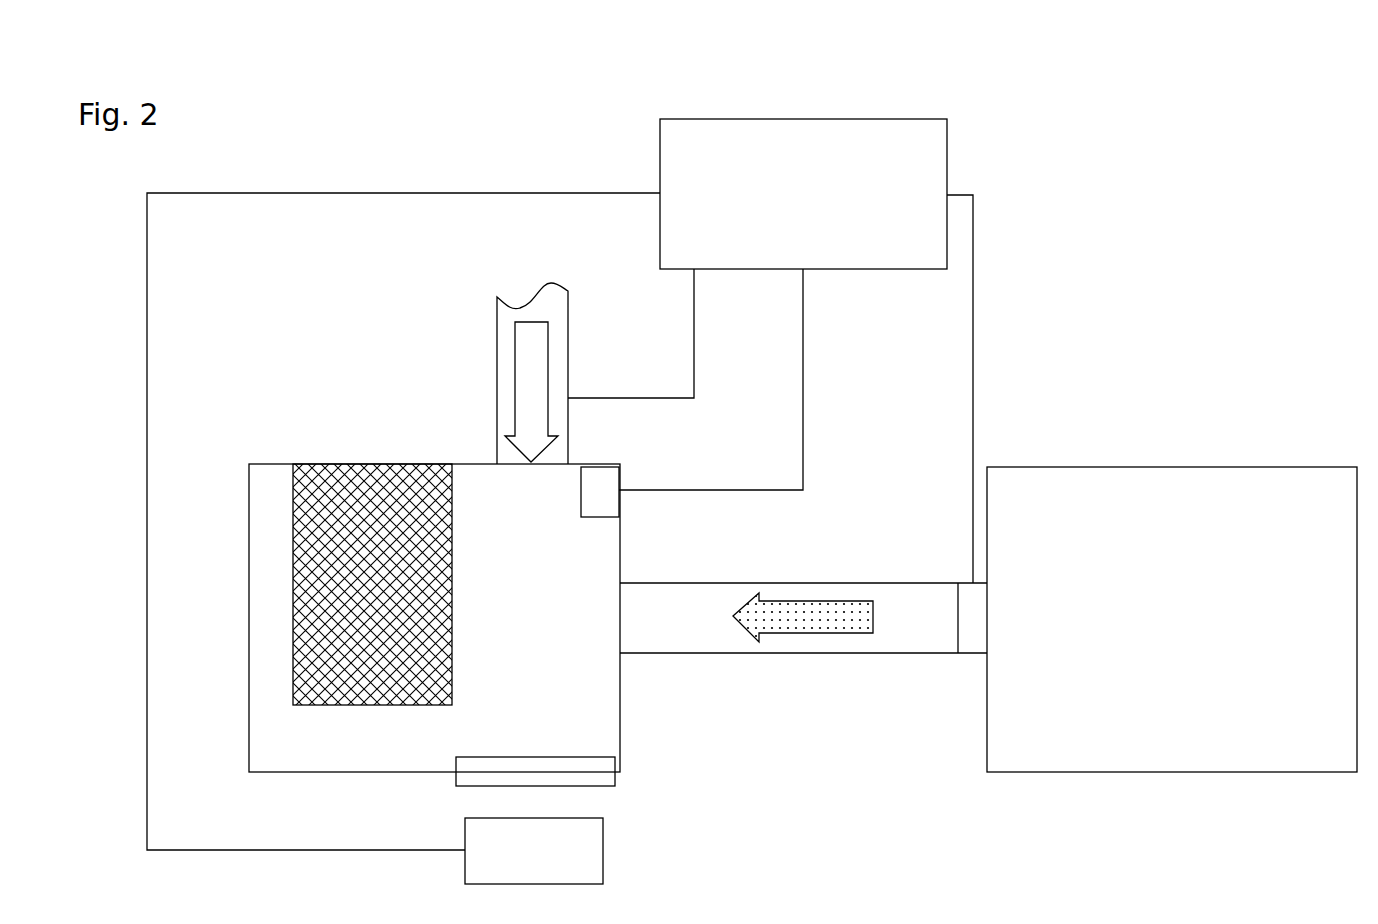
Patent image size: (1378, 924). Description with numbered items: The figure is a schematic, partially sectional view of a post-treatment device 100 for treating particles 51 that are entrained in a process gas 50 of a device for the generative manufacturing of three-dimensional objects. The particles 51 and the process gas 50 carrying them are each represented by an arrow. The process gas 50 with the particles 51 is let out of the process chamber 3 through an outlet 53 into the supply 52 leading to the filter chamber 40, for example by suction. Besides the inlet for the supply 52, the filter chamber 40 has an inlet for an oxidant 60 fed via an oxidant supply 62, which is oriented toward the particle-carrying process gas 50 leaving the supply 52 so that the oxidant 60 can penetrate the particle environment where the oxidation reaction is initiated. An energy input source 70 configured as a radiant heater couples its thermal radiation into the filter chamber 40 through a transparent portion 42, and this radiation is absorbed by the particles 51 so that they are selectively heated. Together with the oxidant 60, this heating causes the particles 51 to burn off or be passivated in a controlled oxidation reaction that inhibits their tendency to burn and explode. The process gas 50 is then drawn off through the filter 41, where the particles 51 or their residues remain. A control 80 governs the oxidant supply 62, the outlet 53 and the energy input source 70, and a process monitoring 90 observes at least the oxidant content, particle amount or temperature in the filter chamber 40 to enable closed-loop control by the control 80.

The post-treatment device 100 is at (420, 135).
The control 80 is at (757, 304).
The oxidant supply 62 is at (506, 325).
The oxidant 60 is at (532, 385).
The filter chamber 40 is at (247, 670).
The filter 41 is at (330, 470).
The process monitoring 90 is at (600, 463).
The supply 52 is at (818, 583).
The outlet 53 is at (973, 653).
The process gas 50 is at (767, 628).
The particles 51 is at (863, 610).
The process chamber 3 is at (1172, 619).
The transparent portion 42 is at (600, 782).
The energy input source 70 is at (572, 882).